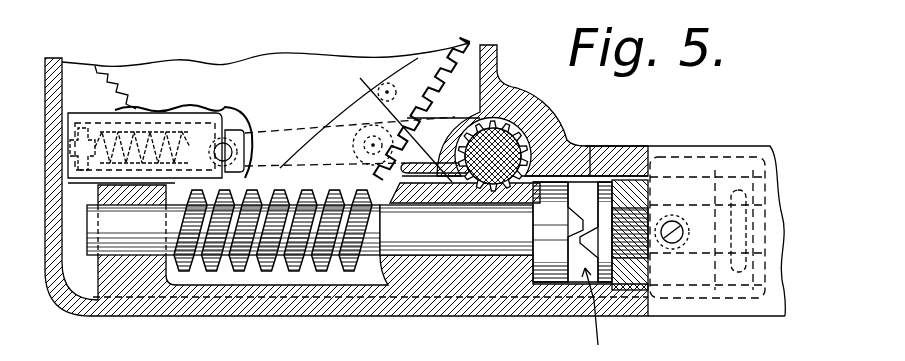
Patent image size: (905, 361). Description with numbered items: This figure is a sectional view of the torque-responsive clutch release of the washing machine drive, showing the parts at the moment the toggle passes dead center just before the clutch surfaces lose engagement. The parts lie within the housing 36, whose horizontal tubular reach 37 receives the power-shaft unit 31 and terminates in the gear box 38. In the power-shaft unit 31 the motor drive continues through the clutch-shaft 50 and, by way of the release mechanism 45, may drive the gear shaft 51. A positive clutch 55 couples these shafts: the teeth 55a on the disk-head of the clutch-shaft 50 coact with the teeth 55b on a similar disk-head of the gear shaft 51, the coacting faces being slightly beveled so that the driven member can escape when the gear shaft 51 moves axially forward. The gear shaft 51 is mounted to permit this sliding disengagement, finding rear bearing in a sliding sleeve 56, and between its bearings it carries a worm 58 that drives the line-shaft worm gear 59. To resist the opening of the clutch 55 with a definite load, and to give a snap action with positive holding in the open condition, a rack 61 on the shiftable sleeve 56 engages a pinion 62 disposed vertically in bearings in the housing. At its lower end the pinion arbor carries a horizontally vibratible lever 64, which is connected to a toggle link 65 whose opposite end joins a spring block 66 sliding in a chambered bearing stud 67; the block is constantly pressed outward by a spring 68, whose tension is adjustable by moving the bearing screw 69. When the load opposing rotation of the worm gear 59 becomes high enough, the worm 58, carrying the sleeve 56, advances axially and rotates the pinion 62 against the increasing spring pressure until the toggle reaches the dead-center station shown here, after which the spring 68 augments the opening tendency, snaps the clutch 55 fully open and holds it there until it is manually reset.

The power-shaft unit 31 is at (462, 258).
The housing 36 is at (589, 120).
The horizontal tubular reach 37 is at (766, 146).
The gear box 38 is at (490, 46).
The release mechanism 45 is at (590, 270).
The clutch-shaft 50 is at (636, 222).
The gear shaft 51 is at (456, 230).
The positive clutch 55 is at (604, 314).
The tooth or teeth of clutch disk-head 55a is at (592, 237).
The tooth or teeth of similar disk-head 55b is at (600, 146).
The sliding sleeve 56 is at (497, 263).
The worm 58 is at (293, 277).
The line-shaft worm gear 59 is at (455, 55).
The rack 61 is at (366, 120).
The pinion 62 is at (500, 128).
The lever 64 is at (420, 124).
The toggle link 65 is at (330, 114).
The spring block 66 is at (236, 128).
The chambered bearing stud 67 is at (195, 113).
The spring 68 is at (145, 135).
The bearing screw 69 is at (80, 125).